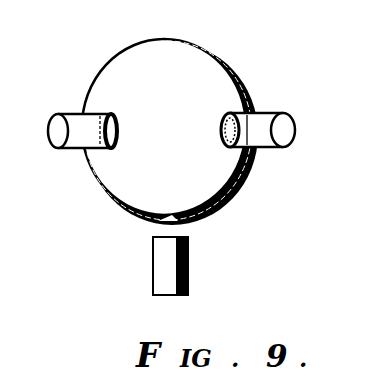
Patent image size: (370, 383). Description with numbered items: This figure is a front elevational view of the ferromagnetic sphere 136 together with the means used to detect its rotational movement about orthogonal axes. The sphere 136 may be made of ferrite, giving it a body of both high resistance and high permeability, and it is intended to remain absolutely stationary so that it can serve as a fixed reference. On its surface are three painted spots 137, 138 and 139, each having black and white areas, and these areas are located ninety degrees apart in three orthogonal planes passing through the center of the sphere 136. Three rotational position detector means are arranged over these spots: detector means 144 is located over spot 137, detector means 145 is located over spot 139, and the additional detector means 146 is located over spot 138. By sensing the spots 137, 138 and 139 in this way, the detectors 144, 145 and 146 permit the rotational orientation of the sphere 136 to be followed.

The ferromagnetic sphere 136 is at (205, 46).
The spot 137 is at (147, 99).
The spot 138 is at (225, 114).
The spot 139 is at (165, 213).
The rotational position detector means 144 is at (54, 144).
The rotational position detector means 145 is at (182, 263).
The rotational position detector means 146 is at (268, 142).